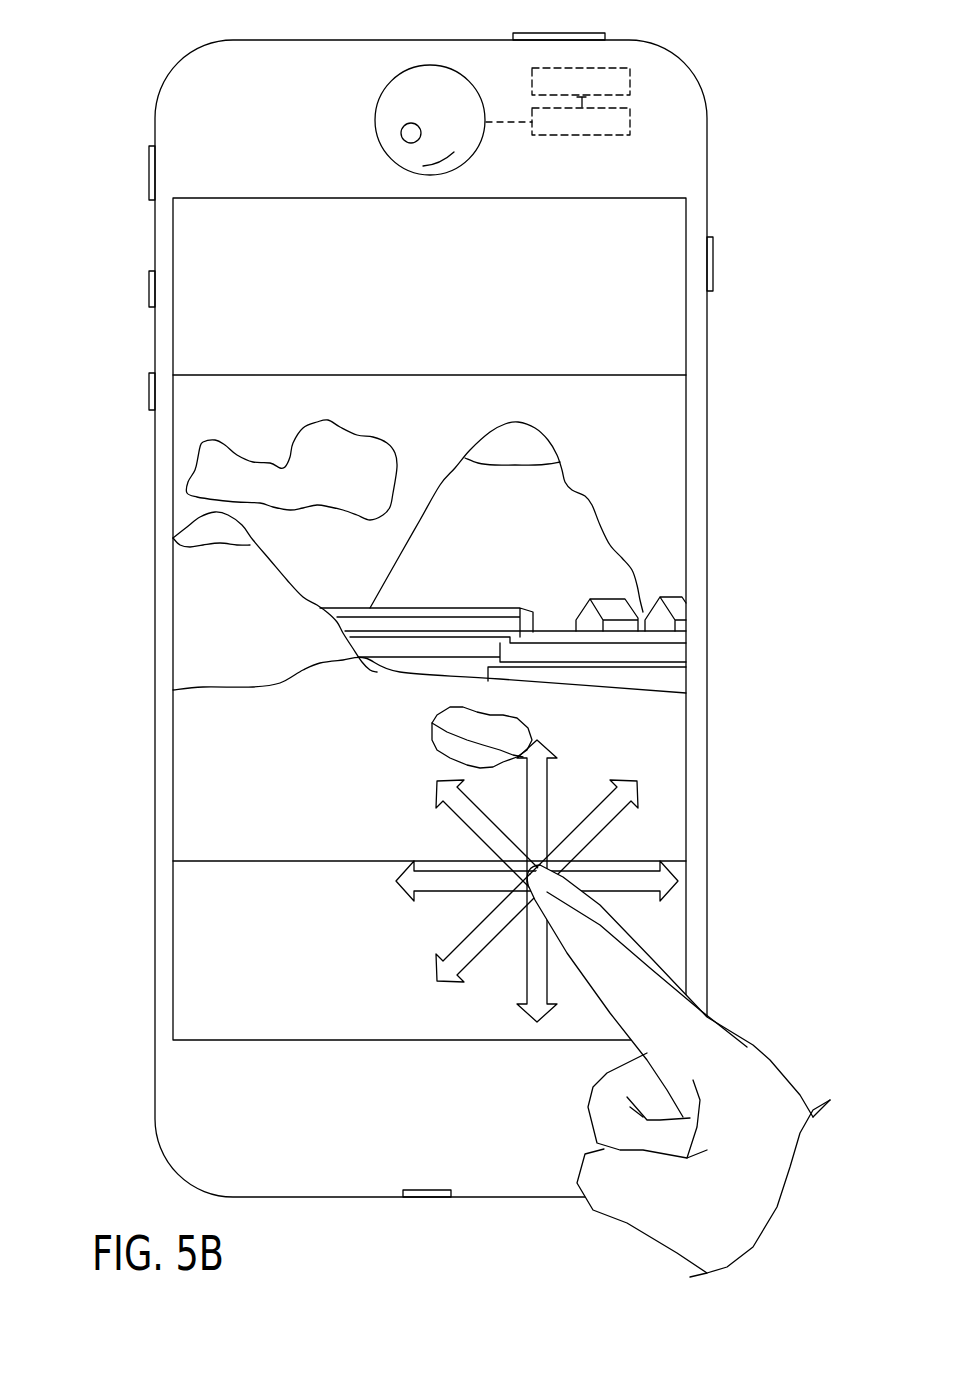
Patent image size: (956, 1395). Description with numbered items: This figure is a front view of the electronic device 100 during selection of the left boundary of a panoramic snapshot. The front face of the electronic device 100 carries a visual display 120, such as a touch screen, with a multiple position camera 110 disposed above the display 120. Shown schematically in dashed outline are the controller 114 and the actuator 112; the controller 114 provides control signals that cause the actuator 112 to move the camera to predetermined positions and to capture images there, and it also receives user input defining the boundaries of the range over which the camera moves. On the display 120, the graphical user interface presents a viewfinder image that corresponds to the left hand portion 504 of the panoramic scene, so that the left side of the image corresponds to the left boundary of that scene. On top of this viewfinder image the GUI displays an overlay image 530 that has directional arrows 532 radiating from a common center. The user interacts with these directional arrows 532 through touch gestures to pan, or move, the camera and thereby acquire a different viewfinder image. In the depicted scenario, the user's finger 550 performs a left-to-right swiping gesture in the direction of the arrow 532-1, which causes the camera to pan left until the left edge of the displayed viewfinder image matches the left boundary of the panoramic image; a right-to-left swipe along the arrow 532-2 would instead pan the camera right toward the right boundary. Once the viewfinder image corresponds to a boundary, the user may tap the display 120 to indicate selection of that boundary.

The electronic device 100 is at (160, 48).
The multiple position camera 110 is at (377, 124).
The actuator 112 is at (632, 124).
The controller 114 is at (632, 82).
The visual display 120 is at (205, 955).
The left hand portion of the scene 504 is at (636, 375).
The overlay image 530 is at (567, 886).
The directional arrows 532 is at (612, 808).
The arrow 532-1 is at (612, 870).
The arrow 532-2 is at (463, 870).
The user's finger 550 is at (607, 918).